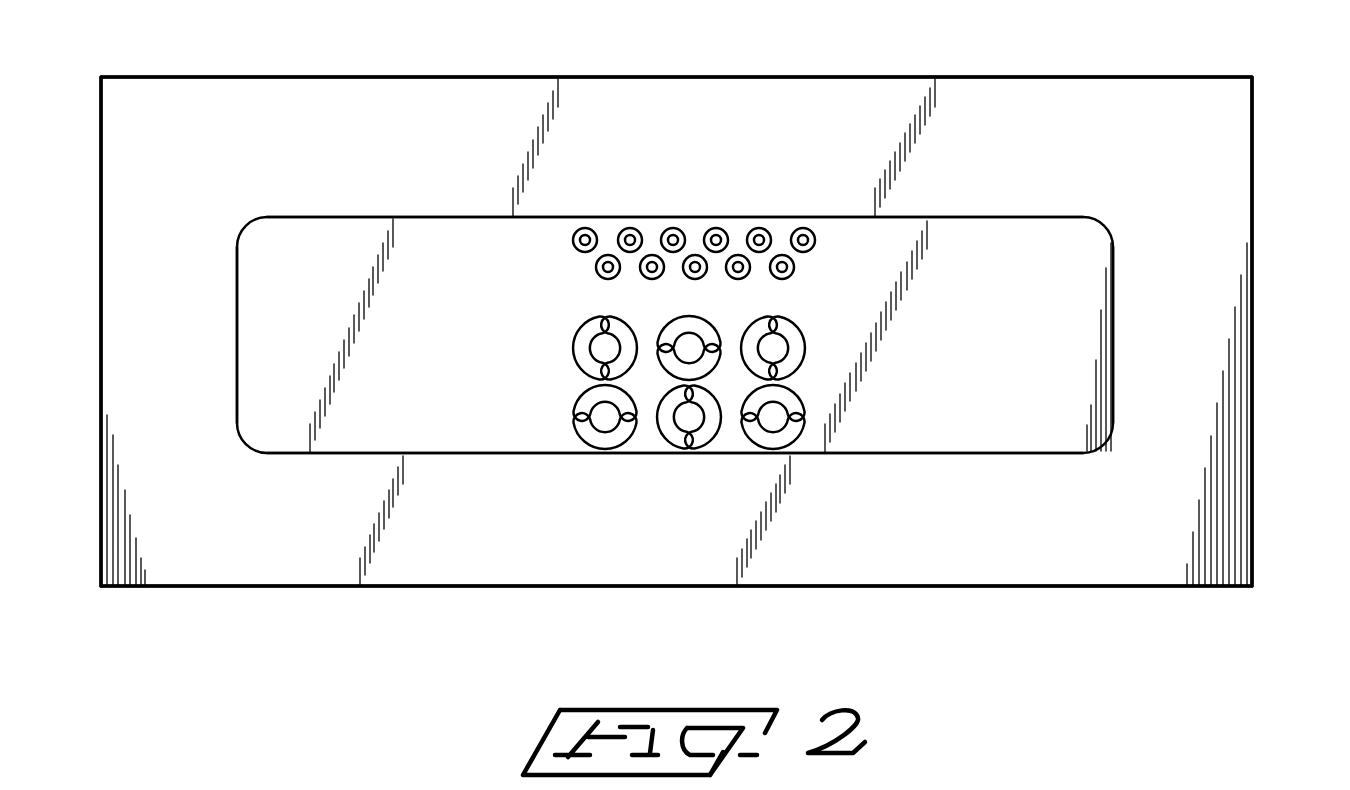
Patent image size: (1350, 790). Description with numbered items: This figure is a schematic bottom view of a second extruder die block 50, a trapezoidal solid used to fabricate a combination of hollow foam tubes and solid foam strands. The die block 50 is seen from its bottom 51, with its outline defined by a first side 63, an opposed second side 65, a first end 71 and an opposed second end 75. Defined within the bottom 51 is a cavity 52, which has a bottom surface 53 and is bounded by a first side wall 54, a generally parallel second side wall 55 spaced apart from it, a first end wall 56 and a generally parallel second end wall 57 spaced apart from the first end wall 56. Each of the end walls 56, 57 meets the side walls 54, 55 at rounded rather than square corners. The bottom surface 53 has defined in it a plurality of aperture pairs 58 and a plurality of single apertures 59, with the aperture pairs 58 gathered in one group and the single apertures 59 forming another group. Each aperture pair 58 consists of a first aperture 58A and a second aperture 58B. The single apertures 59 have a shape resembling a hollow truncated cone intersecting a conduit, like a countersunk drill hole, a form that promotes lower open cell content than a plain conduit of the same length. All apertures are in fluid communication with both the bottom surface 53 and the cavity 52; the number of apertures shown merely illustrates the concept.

The extruder die block 50 is at (200, 628).
The bottom 51 is at (1122, 535).
The cavity 52 is at (1002, 390).
The bottom surface 53 is at (937, 390).
The first side wall 54 is at (458, 216).
The second side wall 55 is at (470, 455).
The first end wall 56 is at (1112, 328).
The second end wall 57 is at (238, 362).
The aperture pairs 58 is at (603, 440).
The first aperture 58A is at (662, 446).
The second aperture 58B is at (722, 445).
The single apertures 59 is at (713, 233).
The first side 63 is at (653, 78).
The second side 65 is at (338, 587).
The first end 71 is at (1253, 390).
The second end 75 is at (101, 390).